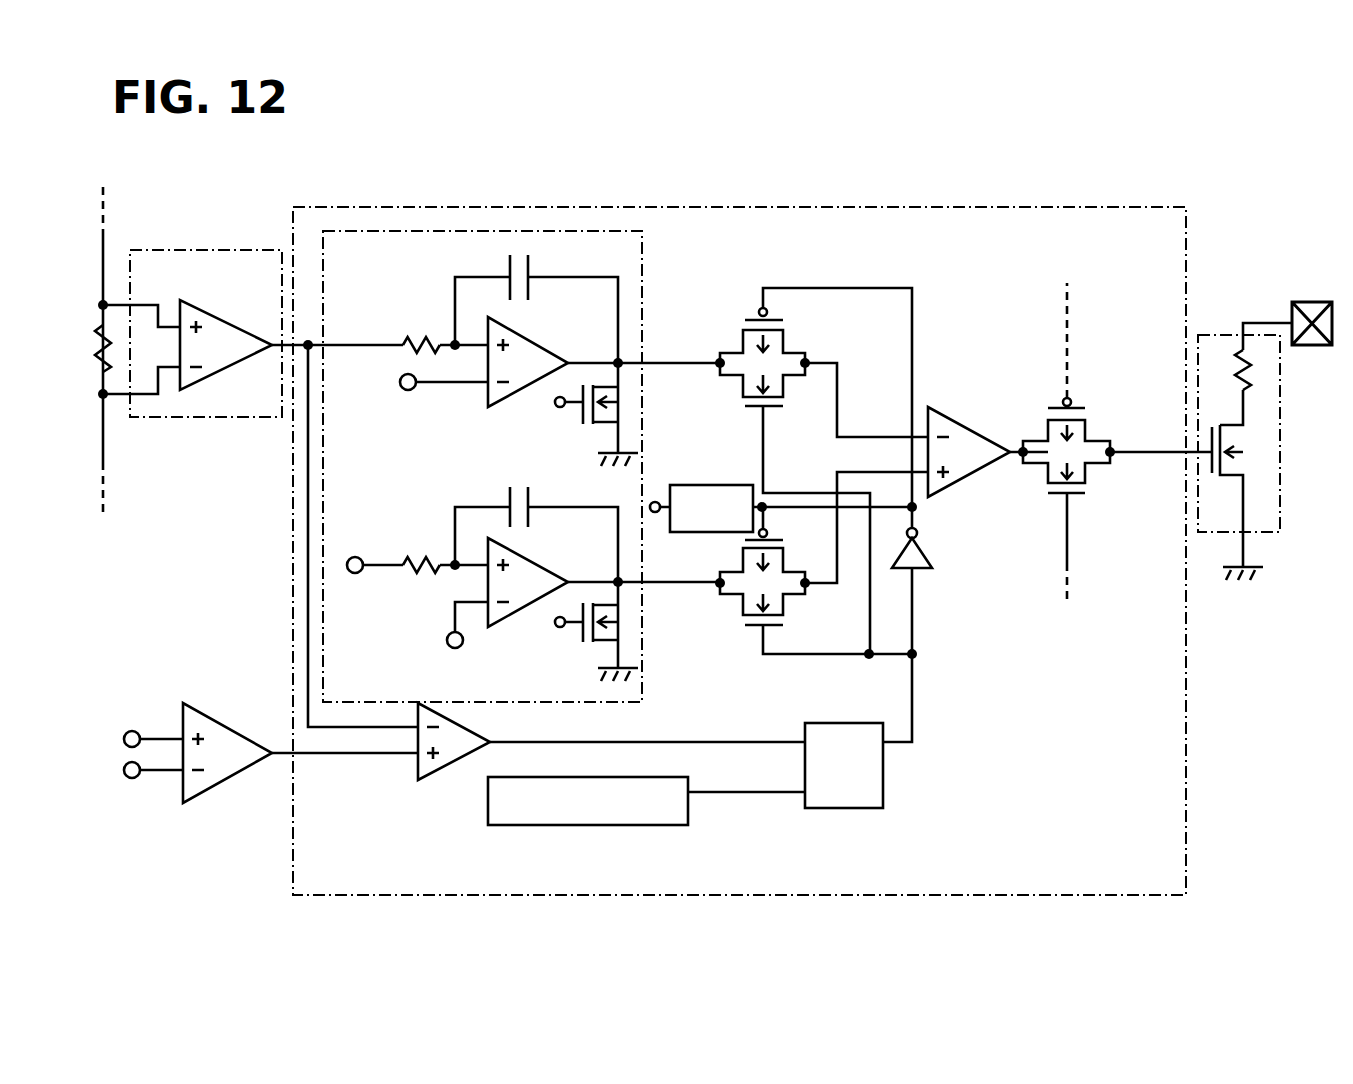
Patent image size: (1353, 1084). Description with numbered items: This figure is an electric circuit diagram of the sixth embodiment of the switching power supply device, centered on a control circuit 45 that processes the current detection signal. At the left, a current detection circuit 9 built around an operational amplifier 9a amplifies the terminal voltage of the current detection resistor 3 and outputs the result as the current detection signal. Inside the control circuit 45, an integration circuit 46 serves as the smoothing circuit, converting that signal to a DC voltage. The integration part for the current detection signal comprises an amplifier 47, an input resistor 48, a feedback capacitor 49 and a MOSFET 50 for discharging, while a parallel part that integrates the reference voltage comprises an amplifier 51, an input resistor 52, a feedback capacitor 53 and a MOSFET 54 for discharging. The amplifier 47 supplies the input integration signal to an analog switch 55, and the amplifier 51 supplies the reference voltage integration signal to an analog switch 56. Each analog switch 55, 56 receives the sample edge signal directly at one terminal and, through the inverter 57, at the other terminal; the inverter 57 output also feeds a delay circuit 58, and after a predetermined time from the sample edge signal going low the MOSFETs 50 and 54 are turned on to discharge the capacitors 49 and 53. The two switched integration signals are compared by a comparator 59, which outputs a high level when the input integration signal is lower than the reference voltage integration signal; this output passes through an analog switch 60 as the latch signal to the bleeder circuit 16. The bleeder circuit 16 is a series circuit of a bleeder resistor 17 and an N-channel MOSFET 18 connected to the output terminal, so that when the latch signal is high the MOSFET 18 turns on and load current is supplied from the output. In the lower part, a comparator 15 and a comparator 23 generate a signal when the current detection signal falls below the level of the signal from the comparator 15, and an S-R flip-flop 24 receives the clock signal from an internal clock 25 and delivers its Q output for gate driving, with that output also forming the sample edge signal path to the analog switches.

The current detection resistor 3 is at (100, 335).
The current detection circuit 9 is at (205, 298).
The operational amplifier 9a is at (240, 320).
The comparator 15 is at (237, 773).
The bleeder circuit 16 is at (1274, 463).
The bleeder resistor 17 is at (1250, 370).
The N-channel MOSFET 18 is at (1257, 463).
The comparator 23 is at (415, 761).
The S-R flip-flop 24 is at (884, 776).
The internal clock 25 is at (488, 812).
The control circuit 45 is at (808, 208).
The integration circuit 46 is at (593, 224).
The amplifier 47 is at (545, 350).
The input resistor 48 is at (415, 332).
The feedback capacitor 49 is at (519, 253).
The MOSFET for discharging 50 is at (575, 414).
The amplifier 51 is at (545, 569).
The input resistor 52 is at (417, 547).
The feedback capacitor 53 is at (517, 486).
The MOSFET for discharging 54 is at (582, 642).
The analog switch 55 is at (735, 326).
The analog switch 56 is at (737, 610).
The inverter 57 is at (925, 556).
The delay circuit 58 is at (720, 485).
The comparator 59 is at (967, 428).
The analog switch 60 is at (1042, 418).